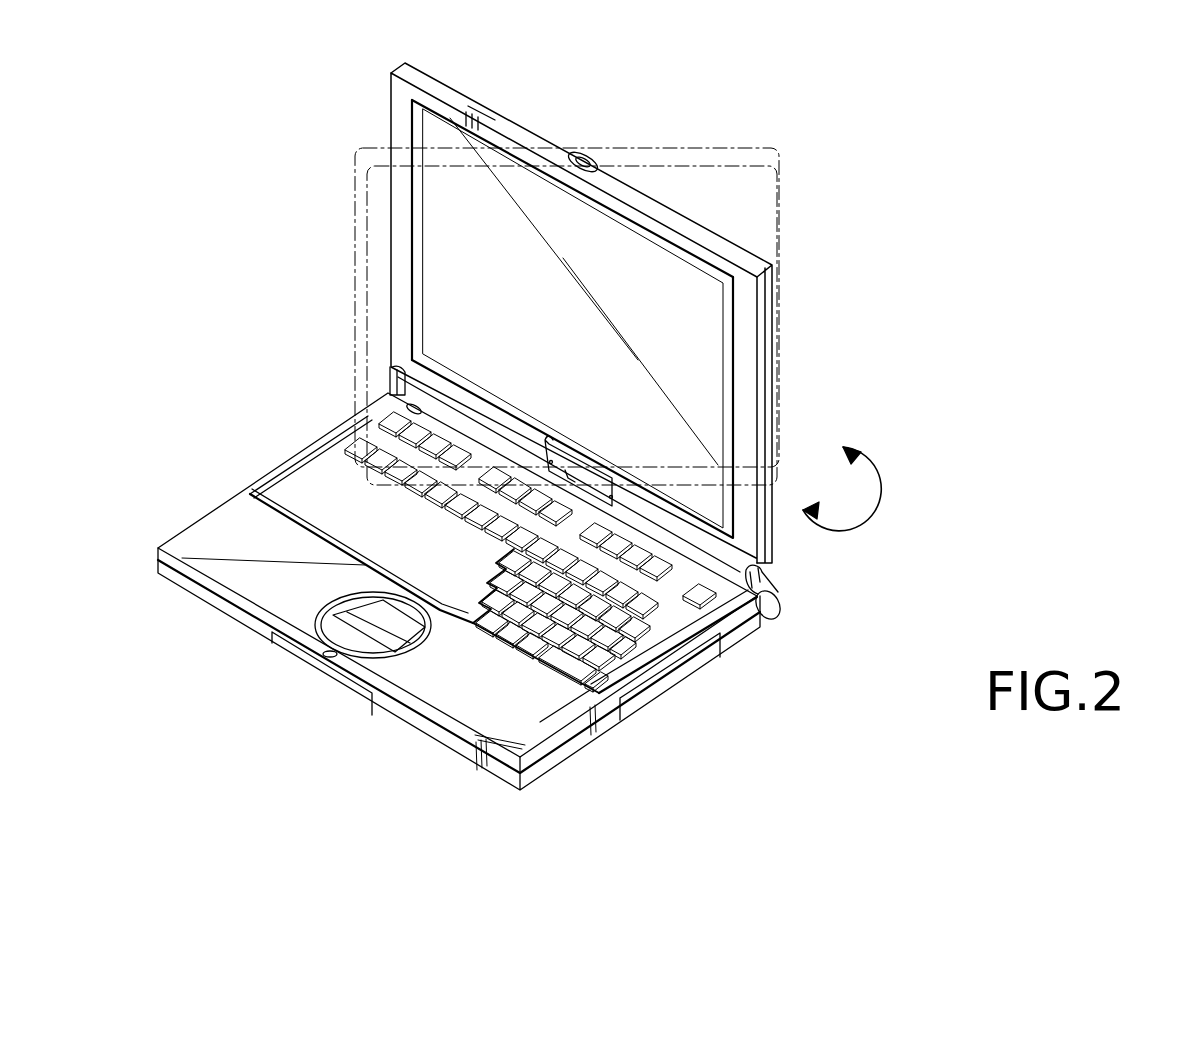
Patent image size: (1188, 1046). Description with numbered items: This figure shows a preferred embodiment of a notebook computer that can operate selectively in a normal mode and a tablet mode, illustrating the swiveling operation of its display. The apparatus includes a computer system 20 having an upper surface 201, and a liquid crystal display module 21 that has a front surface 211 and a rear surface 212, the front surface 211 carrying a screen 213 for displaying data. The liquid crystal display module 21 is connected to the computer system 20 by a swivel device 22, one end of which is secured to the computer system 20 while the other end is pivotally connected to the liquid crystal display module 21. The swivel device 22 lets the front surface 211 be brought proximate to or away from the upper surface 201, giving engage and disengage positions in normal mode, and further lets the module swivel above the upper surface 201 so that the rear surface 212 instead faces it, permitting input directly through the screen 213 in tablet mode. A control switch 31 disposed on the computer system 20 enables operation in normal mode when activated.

The computer system 20 is at (465, 756).
The upper surface 201 is at (550, 715).
The liquid crystal display module 21 is at (776, 363).
The front surface 211 is at (403, 128).
The rear surface 212 is at (440, 79).
The screen 213 is at (650, 263).
The swivel device 22 is at (553, 447).
The control switch 31 is at (372, 393).